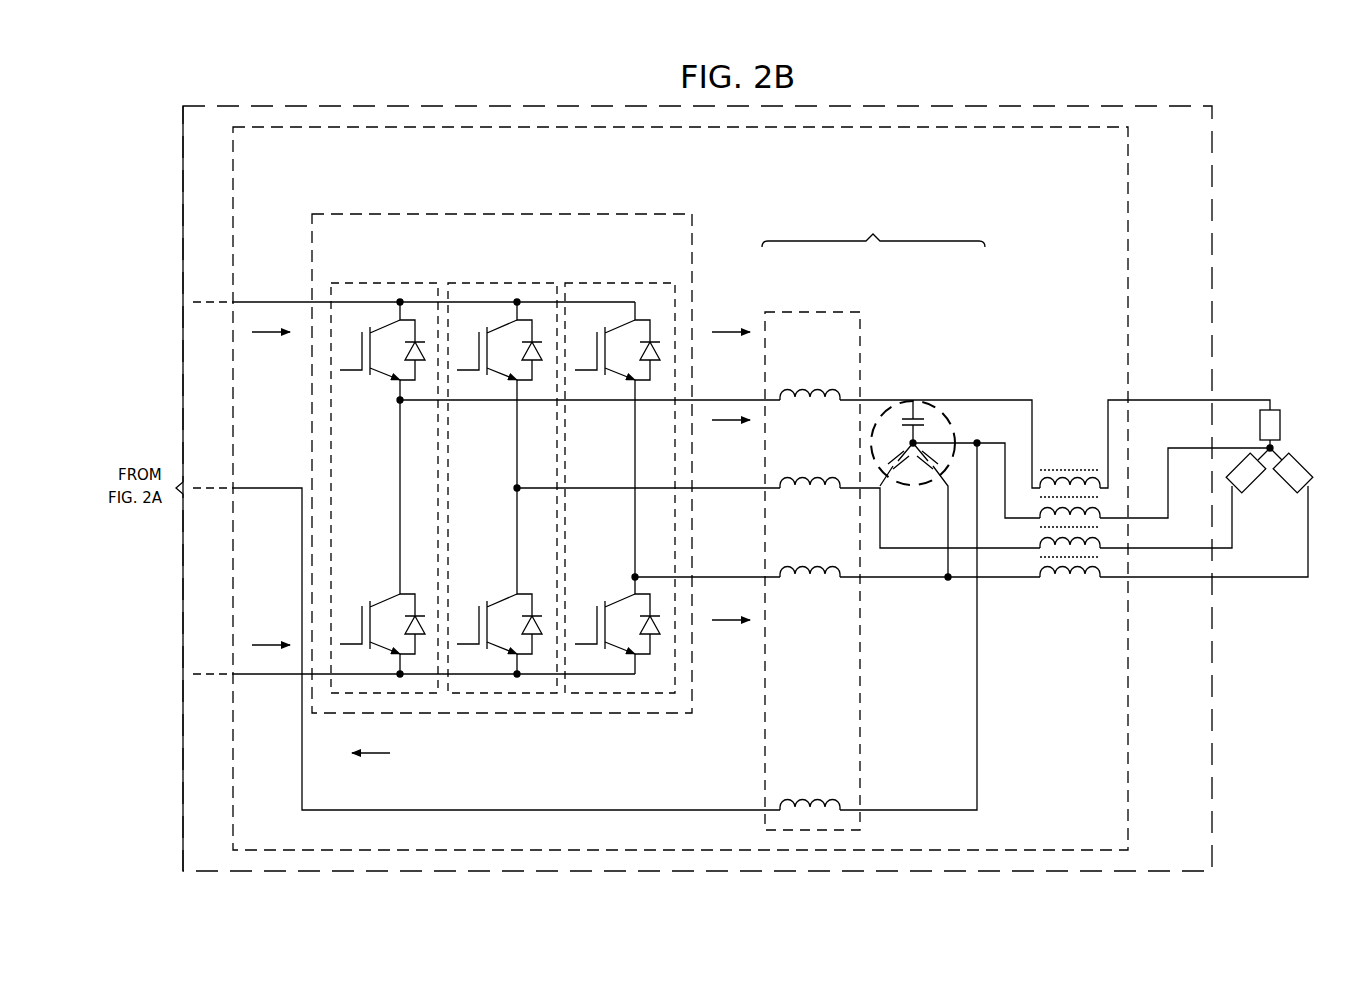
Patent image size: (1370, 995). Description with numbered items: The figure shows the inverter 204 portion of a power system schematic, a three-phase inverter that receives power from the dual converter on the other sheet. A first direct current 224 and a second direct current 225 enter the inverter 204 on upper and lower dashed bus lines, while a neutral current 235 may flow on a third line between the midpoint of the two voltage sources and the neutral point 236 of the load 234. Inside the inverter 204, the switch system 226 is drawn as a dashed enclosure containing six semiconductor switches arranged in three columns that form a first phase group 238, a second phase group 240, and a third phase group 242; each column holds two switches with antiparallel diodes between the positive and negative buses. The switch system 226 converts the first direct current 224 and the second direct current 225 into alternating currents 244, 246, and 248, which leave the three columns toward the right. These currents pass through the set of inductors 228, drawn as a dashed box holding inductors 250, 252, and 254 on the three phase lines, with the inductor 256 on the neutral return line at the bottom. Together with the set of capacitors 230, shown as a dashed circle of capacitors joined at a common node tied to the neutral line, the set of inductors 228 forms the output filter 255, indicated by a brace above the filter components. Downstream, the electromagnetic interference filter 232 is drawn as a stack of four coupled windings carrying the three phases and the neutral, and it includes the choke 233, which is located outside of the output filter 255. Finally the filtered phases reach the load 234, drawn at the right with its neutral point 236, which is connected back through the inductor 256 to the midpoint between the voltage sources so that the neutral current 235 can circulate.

The inverter 204 is at (1132, 288).
The first direct current 224 is at (272, 336).
The second direct current 225 is at (272, 645).
The switch system 226 is at (455, 212).
The set of inductors 228 is at (815, 543).
The set of capacitors 230 is at (958, 440).
The electromagnetic interference filter 232 is at (1078, 416).
The choke 233 is at (1072, 596).
The load 234 is at (1290, 426).
The neutral current 235 is at (627, 632).
The neutral point 236 is at (1268, 456).
The first phase group 238 is at (385, 282).
The second phase group 240 is at (502, 282).
The third phase group 242 is at (617, 282).
The alternating current 244 is at (730, 338).
The alternating current 246 is at (730, 428).
The alternating current 248 is at (730, 628).
The inductor 250 is at (822, 383).
The inductor 252 is at (822, 472).
The inductor 254 is at (822, 561).
The output filter 255 is at (1016, 521).
The inductor 256 is at (822, 795).